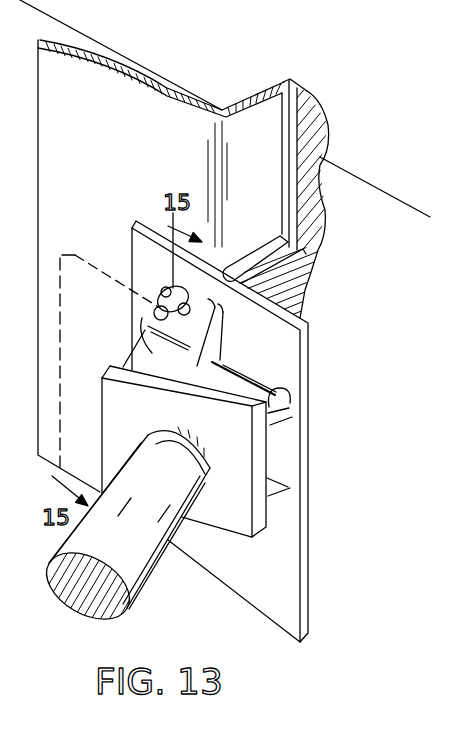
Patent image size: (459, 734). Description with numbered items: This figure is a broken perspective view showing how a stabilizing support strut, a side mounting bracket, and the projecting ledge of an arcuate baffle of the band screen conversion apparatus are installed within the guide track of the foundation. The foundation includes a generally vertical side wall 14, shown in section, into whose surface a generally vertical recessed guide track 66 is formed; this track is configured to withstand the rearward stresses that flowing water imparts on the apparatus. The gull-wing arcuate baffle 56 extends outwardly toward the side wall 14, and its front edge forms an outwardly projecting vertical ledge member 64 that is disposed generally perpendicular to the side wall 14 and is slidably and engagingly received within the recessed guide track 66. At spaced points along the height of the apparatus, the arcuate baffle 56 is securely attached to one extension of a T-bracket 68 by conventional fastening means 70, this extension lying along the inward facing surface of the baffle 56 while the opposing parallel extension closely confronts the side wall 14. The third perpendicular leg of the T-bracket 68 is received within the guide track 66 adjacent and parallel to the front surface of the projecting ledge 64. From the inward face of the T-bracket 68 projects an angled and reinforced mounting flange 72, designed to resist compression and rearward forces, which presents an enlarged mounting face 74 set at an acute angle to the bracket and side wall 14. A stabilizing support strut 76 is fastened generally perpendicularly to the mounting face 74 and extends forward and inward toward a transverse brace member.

The side wall 14 is at (313, 123).
The arcuate baffle 56 is at (148, 154).
The projecting ledge member 64 is at (255, 123).
The recessed guide track 66 is at (301, 82).
The T-bracket 68 is at (296, 353).
The fastening means 70 is at (153, 307).
The mounting flange 72 is at (140, 339).
The mounting face 74 is at (238, 523).
The stabilizing support strut 76 is at (170, 580).